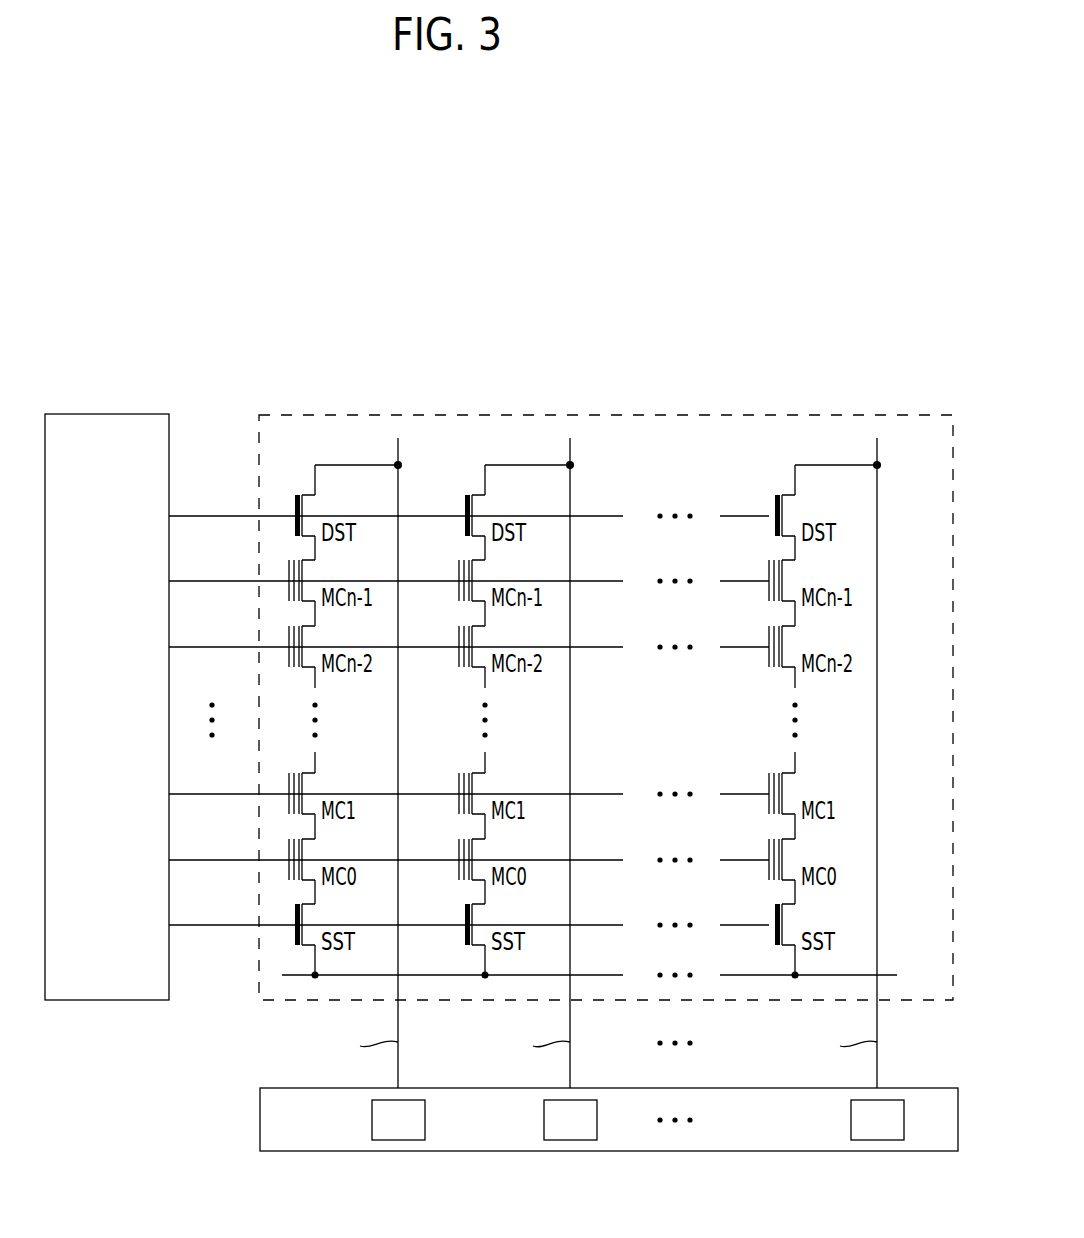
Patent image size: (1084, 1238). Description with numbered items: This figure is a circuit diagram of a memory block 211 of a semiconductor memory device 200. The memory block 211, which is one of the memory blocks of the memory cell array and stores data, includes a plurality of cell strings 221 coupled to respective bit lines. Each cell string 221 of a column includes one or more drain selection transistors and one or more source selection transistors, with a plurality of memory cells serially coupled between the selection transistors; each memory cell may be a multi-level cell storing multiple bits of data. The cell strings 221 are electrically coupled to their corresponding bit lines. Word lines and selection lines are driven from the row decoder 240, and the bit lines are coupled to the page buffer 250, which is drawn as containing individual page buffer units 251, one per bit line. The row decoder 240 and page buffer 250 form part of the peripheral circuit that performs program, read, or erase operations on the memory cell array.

The memory device 200 is at (926, 314).
The memory block 211 is at (838, 413).
The cell string 221 is at (304, 458).
The row decoder 240 is at (110, 413).
The page buffer 250 is at (571, 1119).
The page buffer 251 is at (372, 1122).